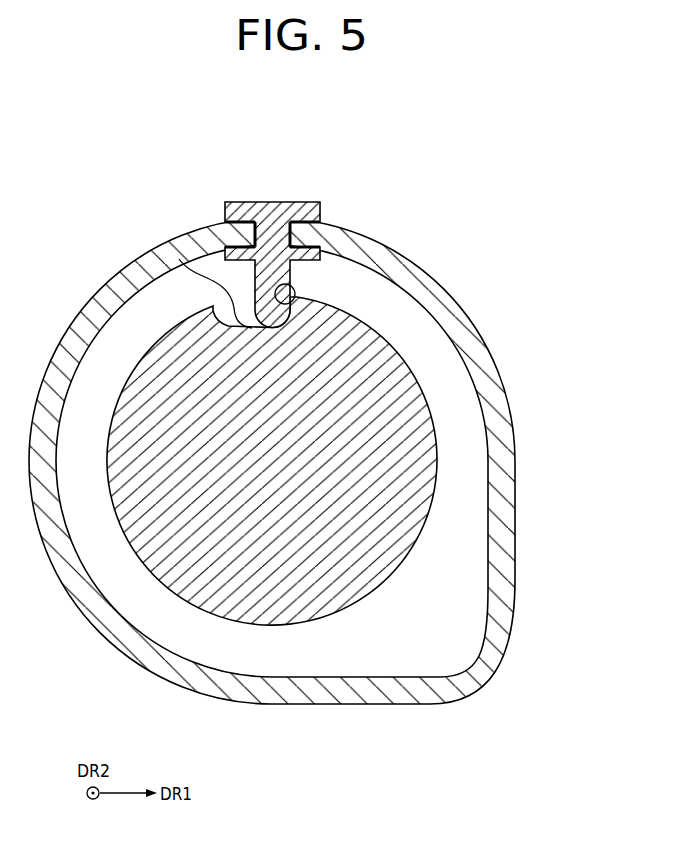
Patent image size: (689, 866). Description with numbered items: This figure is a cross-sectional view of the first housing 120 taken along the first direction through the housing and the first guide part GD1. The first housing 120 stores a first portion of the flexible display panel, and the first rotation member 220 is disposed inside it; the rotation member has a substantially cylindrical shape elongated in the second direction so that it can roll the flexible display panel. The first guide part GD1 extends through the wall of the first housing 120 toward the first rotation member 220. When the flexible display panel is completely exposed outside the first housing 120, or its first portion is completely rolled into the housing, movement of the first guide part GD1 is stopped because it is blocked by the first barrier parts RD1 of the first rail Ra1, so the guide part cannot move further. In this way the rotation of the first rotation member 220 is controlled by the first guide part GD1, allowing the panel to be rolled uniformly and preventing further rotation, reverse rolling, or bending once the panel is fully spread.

The first housing 120 is at (508, 538).
The first rotation member 220 is at (425, 463).
The first guide part GD1 is at (280, 207).
The first rail Ra1 is at (174, 238).
The first barrier part RD1 is at (290, 280).